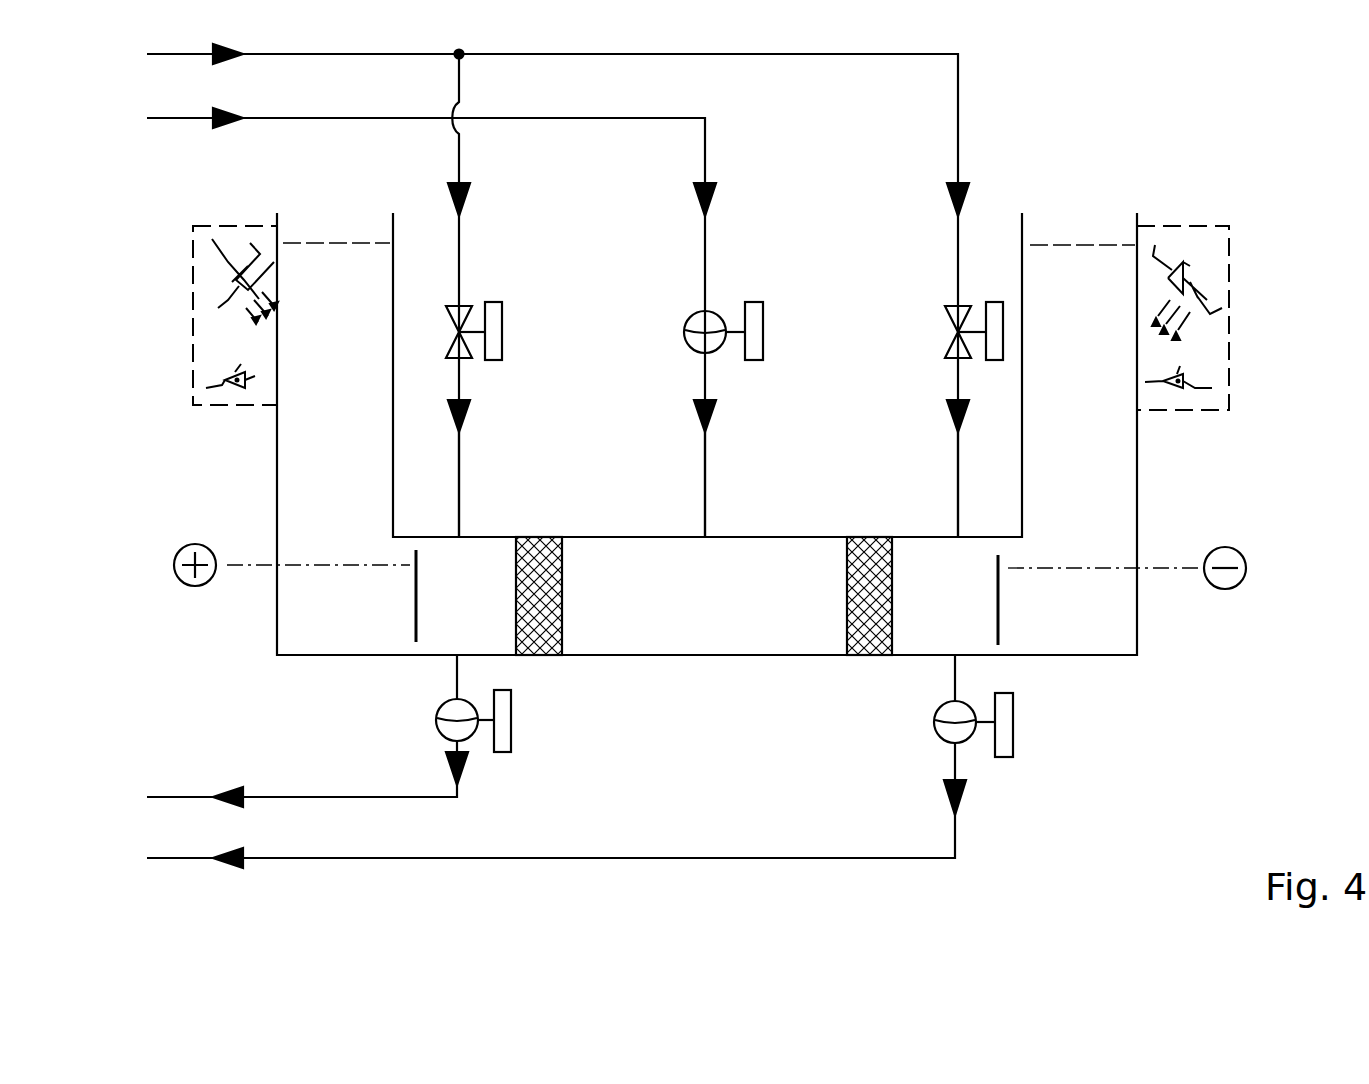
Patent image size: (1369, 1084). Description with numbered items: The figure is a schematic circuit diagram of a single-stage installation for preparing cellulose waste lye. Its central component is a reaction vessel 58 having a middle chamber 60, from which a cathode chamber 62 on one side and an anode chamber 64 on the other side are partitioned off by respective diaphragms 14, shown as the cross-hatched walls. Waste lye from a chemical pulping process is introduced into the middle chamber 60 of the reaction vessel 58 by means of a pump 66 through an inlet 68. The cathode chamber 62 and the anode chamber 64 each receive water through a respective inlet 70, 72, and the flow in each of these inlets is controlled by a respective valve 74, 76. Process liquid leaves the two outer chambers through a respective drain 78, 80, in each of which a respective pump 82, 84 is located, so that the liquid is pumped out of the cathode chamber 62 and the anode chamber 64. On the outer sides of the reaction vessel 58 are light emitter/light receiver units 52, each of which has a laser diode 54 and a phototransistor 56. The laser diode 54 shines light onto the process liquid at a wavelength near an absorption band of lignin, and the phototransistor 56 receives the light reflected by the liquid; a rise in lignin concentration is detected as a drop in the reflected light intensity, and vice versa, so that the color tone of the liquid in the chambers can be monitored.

The diaphragm 14 is at (868, 545).
The light emitter/light receiver unit 52 is at (193, 252).
The laser diode 54 is at (218, 245).
The phototransistor 56 is at (228, 382).
The reaction vessel 58 is at (703, 657).
The middle chamber 60 is at (722, 609).
The cathode chamber 62 is at (1099, 366).
The anode chamber 64 is at (350, 366).
The pump 66 is at (692, 308).
The inlet 68 is at (706, 476).
The inlet 70 is at (959, 476).
The inlet 72 is at (460, 476).
The valve 74 is at (948, 304).
The valve 76 is at (456, 304).
The drain 78 is at (953, 676).
The drain 80 is at (455, 675).
The pump 82 is at (934, 745).
The pump 84 is at (472, 740).